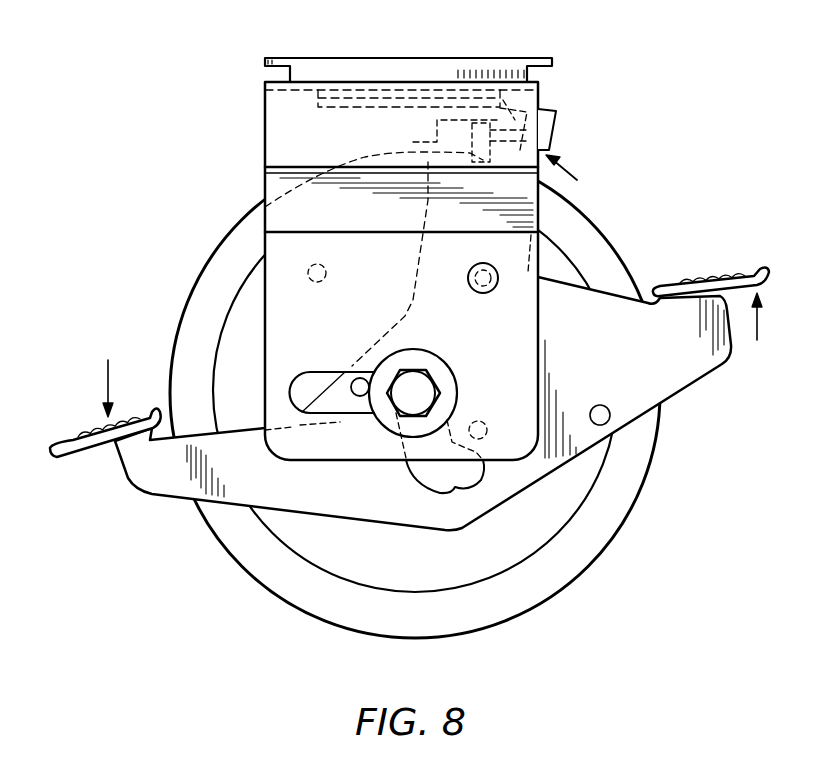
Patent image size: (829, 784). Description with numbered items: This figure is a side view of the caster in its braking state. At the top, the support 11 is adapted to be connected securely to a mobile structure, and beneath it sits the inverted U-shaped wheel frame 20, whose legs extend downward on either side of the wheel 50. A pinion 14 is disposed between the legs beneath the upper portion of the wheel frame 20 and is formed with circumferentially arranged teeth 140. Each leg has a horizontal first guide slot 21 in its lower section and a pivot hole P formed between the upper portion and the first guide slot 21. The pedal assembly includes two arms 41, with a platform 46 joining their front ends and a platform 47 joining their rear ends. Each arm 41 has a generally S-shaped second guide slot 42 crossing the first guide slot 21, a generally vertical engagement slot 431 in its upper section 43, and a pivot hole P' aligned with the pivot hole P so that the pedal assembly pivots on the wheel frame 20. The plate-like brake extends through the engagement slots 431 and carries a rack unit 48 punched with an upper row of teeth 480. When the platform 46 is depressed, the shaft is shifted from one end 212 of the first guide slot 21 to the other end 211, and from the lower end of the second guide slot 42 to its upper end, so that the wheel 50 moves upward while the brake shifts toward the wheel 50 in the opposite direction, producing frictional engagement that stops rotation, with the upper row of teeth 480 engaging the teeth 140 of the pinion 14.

The support 11 is at (263, 60).
The pinion 14 is at (383, 95).
The circumferentially arranged teeth 140 is at (503, 100).
The wheel frame 20 is at (266, 118).
The engagement slot 431 is at (437, 134).
The upper row of teeth 480 is at (540, 93).
The rack unit 48 is at (556, 118).
The upper section 43 is at (553, 148).
The platform 47 is at (733, 272).
The platform 46 is at (93, 437).
The end of the first guide slot 212 is at (300, 371).
The other end of the first guide slot 211 is at (440, 374).
The first guide slot 21 is at (325, 413).
The second guide slot 42 is at (447, 491).
The arm 41 is at (367, 512).
The wheel 50 is at (612, 540).
The pivot hole P is at (465, 264).
The pivot hole P' is at (447, 299).